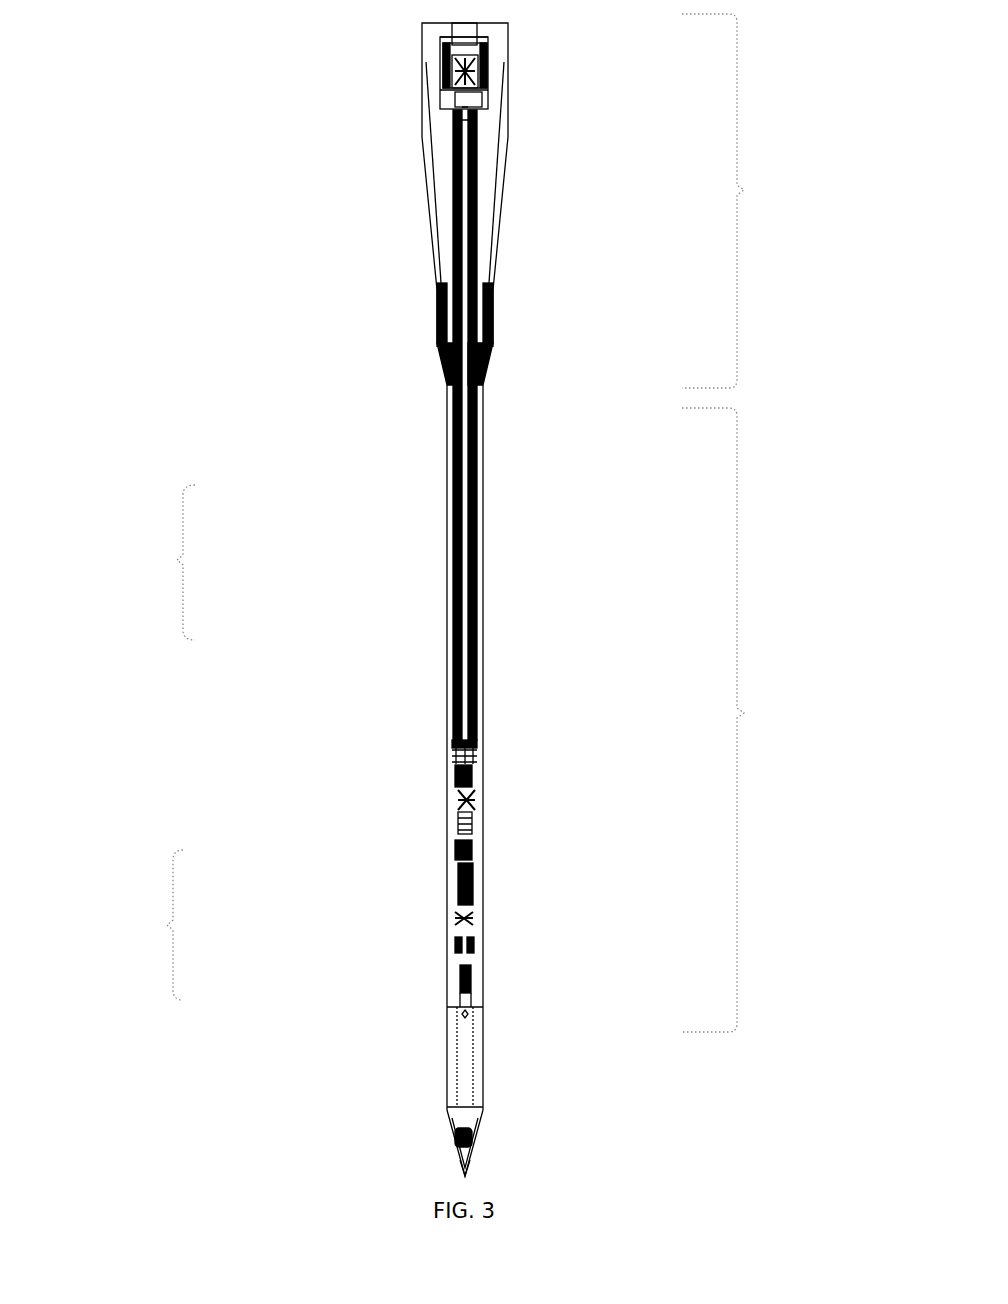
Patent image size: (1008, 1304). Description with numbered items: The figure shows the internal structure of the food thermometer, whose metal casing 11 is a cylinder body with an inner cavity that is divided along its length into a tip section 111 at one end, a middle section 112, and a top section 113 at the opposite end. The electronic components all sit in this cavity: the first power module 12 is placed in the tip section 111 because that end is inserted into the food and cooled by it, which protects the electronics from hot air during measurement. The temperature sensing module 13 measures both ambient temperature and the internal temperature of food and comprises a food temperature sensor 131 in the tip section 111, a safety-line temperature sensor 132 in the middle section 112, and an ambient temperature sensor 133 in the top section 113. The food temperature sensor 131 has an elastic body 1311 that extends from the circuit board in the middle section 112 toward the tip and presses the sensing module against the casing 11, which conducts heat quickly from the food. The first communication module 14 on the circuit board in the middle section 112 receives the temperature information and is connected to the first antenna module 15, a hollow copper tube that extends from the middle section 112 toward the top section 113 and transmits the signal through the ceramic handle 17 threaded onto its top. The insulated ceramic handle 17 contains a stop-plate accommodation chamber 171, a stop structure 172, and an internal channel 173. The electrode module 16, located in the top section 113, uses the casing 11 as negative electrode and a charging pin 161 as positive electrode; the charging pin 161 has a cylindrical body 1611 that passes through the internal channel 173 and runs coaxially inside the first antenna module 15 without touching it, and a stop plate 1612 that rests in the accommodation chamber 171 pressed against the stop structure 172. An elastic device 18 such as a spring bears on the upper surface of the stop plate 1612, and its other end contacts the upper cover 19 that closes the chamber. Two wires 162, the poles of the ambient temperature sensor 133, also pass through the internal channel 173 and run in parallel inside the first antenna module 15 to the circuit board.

The casing 11 is at (447, 580).
The first power module 12 is at (477, 1053).
The temperature sensing module 13 is at (126, 925).
The first communication module 14 is at (483, 815).
The first antenna module 15 is at (443, 357).
The electrode module 16 is at (137, 562).
The ceramic handle 17 is at (496, 240).
The elastic device 18 is at (488, 62).
The upper cover 19 is at (478, 25).
The tip section 111 is at (477, 1163).
The middle section 112 is at (766, 720).
The top section 113 is at (766, 201).
The food temperature sensor 131 is at (452, 1118).
The safety-line temperature sensor 132 is at (452, 766).
The ambient temperature sensor 133 is at (478, 90).
The charging pin 161 is at (285, 48).
The wires 162 is at (468, 136).
The stop-plate accommodation chamber 171 is at (443, 50).
The stop structure 172 is at (483, 113).
The internal channel 173 is at (478, 126).
The elastic body 1311 is at (455, 1138).
The cylindrical body 1611 is at (455, 128).
The stop plate 1612 is at (440, 96).